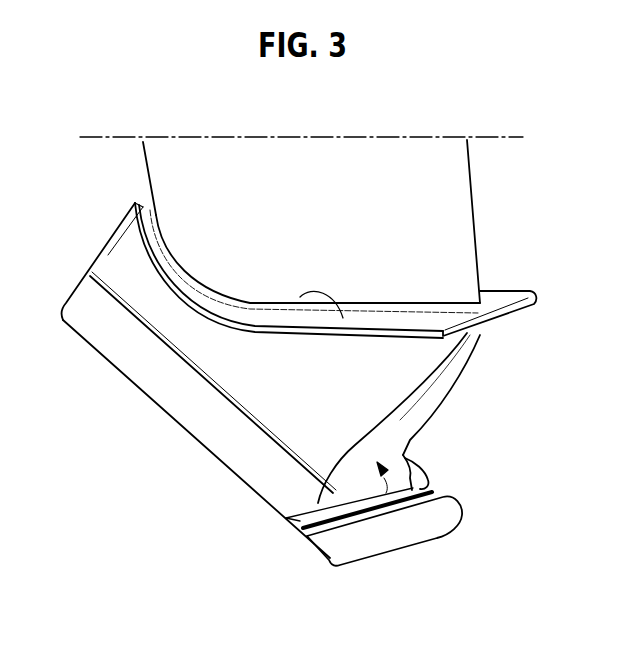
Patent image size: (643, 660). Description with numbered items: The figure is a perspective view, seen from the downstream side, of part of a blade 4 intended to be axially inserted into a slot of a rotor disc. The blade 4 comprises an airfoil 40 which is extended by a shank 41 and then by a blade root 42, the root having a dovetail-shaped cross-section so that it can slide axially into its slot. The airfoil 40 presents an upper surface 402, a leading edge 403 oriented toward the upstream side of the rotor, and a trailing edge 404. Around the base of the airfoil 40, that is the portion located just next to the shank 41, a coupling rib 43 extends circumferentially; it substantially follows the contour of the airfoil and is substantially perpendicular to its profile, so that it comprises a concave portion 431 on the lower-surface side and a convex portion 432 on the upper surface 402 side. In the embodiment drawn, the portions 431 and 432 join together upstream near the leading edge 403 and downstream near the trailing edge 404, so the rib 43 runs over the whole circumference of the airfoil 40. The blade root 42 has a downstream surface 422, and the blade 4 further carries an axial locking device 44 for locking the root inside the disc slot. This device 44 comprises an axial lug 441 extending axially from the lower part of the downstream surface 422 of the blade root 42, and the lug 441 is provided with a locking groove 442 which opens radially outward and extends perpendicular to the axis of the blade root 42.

The blade 4 is at (586, 249).
The airfoil 40 is at (183, 172).
The upper surface 402 is at (230, 220).
The leading edge 403 is at (139, 175).
The trailing edge 404 is at (490, 211).
The shank 41 is at (147, 281).
The blade root 42 is at (222, 431).
The downstream surface 422 is at (288, 514).
The coupling rib 43 is at (518, 338).
The concave portion 431 is at (496, 298).
The convex portion 432 is at (300, 297).
The axial locking device 44 is at (430, 565).
The axial lug 441 is at (419, 529).
The locking groove 442 is at (413, 474).